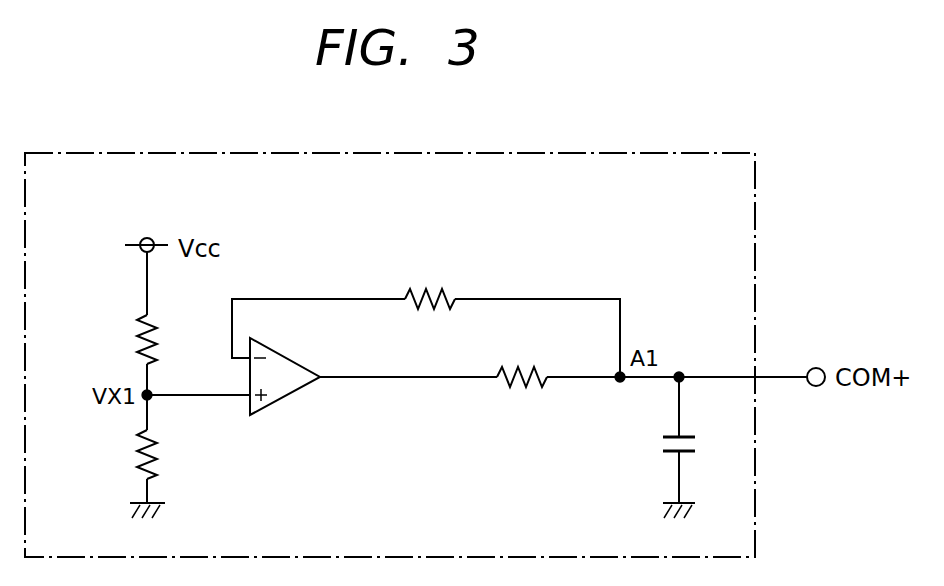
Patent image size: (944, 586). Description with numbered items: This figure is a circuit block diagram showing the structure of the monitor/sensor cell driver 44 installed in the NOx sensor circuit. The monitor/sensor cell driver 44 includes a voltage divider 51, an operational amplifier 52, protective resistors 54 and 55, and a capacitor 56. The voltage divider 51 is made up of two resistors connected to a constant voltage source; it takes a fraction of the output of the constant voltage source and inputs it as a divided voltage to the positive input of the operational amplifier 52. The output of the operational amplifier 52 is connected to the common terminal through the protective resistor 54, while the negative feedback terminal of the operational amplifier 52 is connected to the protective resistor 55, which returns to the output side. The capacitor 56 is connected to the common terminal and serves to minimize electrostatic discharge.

The monitor/sensor cell driver 44 is at (680, 152).
The voltage divider 51 is at (112, 320).
The operational amplifier 52 is at (285, 398).
The protective resistor 54 is at (525, 368).
The protective resistor 55 is at (432, 290).
The capacitor 56 is at (690, 436).